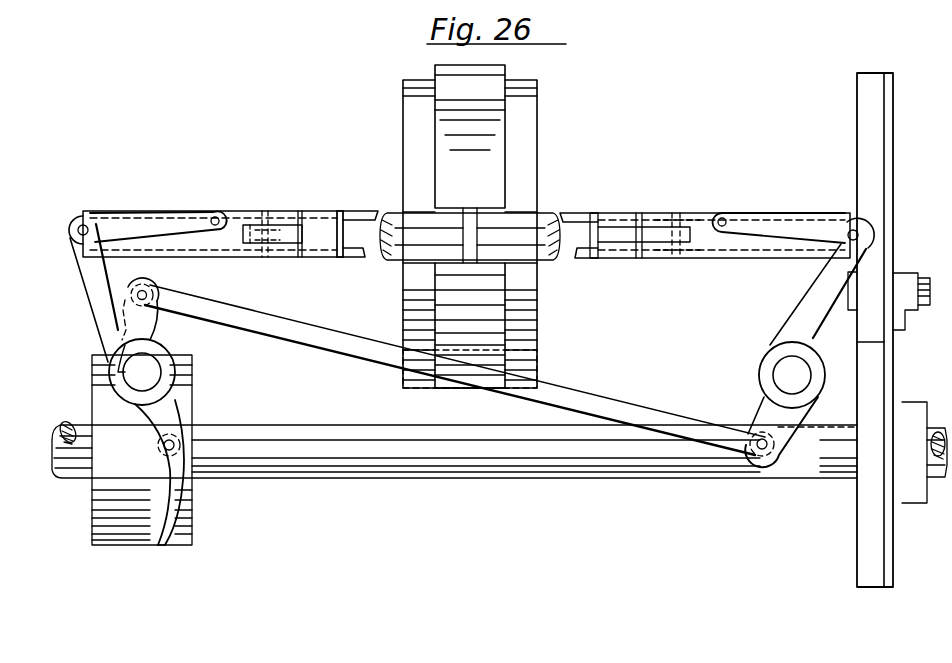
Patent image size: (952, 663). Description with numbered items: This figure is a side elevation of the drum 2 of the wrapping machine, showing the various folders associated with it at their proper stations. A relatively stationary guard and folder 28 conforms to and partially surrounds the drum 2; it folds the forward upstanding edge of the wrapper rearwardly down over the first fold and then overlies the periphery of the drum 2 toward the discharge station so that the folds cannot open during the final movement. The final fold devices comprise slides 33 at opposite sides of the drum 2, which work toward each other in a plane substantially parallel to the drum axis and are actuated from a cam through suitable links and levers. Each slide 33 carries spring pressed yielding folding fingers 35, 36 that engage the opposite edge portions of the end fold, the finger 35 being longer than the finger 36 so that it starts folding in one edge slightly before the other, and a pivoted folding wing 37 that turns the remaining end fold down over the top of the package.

The drum 2 is at (527, 146).
The guard and folder 28 is at (440, 160).
The slides 33 is at (238, 203).
The yielding folding finger 35 is at (368, 207).
The yielding folding finger 36 is at (350, 258).
The folding wing 37 is at (343, 236).